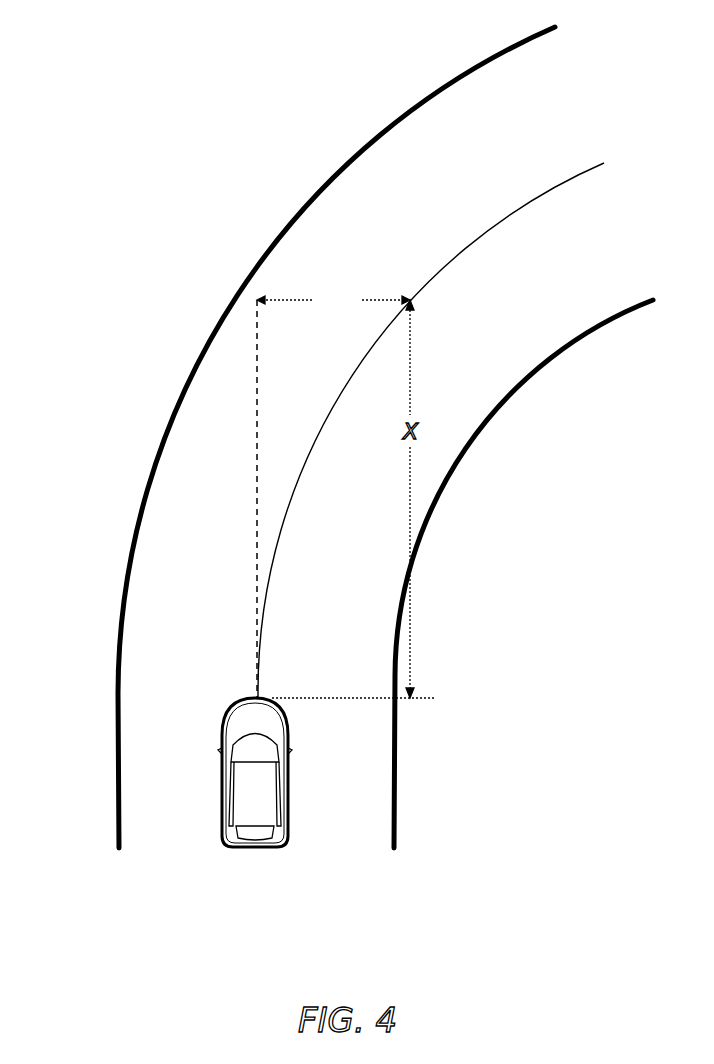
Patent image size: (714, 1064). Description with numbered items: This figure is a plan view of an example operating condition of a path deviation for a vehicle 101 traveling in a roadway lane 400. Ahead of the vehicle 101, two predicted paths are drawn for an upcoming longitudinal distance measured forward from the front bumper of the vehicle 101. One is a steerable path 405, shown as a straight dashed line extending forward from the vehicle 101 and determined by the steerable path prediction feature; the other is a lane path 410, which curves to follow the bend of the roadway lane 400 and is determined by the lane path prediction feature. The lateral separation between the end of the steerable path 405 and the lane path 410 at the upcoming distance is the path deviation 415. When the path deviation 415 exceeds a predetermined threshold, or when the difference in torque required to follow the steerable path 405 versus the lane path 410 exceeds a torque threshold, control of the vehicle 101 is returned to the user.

The roadway lane 400 is at (118, 728).
The steerable path 405 is at (257, 505).
The lane path 410 is at (307, 462).
The path deviation 415 is at (333, 300).
The vehicle 101 is at (287, 734).